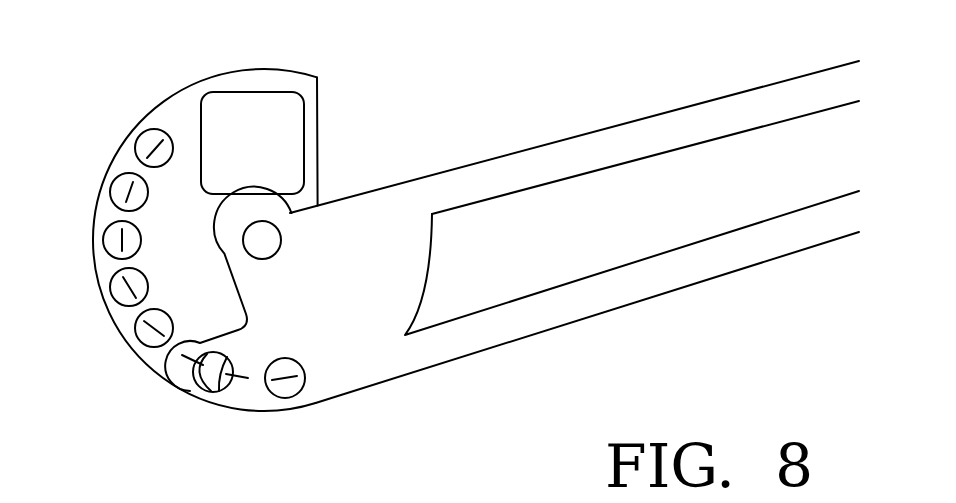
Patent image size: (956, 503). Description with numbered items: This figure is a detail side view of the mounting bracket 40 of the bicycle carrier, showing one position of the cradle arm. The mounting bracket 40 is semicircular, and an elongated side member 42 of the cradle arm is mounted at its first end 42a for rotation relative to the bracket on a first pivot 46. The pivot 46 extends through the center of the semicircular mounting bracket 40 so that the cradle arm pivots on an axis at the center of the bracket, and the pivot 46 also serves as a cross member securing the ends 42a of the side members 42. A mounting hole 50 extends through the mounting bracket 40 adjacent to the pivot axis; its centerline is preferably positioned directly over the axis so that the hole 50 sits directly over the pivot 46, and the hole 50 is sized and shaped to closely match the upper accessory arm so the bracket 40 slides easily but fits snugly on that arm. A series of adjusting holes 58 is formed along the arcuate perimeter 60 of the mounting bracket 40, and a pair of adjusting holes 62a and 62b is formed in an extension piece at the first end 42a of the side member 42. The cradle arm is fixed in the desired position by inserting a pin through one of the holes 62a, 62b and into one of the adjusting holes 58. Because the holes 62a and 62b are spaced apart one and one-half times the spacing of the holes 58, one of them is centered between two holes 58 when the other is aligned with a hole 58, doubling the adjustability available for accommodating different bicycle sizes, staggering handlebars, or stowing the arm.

The mounting bracket 40 is at (247, 78).
The side member 42 is at (682, 272).
The first end of side member 42a is at (373, 367).
The first pivot 46 is at (265, 243).
The mounting hole 50 is at (280, 129).
The adjusting holes 58 is at (115, 193).
The arcuate perimeter 60 is at (194, 116).
The adjusting hole 62a is at (283, 394).
The adjusting hole 62b is at (211, 390).